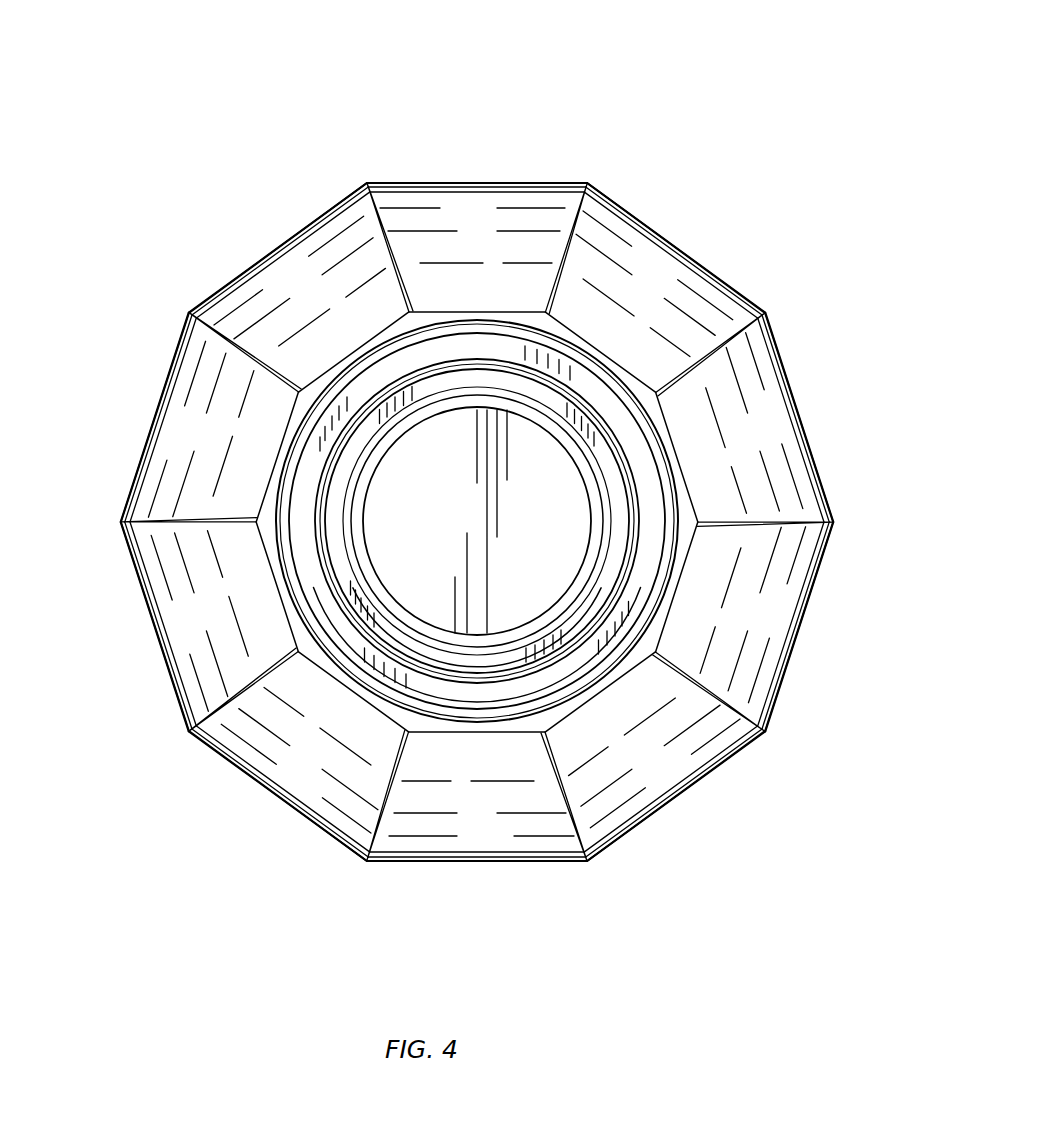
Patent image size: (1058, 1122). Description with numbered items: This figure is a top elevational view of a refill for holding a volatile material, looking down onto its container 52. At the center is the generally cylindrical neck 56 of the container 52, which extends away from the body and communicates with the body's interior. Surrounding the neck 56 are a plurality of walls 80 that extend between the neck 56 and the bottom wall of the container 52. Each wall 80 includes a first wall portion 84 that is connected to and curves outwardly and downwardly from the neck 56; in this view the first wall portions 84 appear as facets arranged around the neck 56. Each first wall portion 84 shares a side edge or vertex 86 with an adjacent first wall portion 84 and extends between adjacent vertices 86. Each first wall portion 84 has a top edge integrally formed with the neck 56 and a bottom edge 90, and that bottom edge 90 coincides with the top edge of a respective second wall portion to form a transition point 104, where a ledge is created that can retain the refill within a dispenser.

The container 52 is at (773, 143).
The neck 56 is at (598, 452).
The walls 80 is at (208, 270).
The first wall portion 84 is at (338, 235).
The vertex 86 is at (365, 182).
The bottom edge 90 is at (280, 238).
The transition point 104 is at (258, 253).